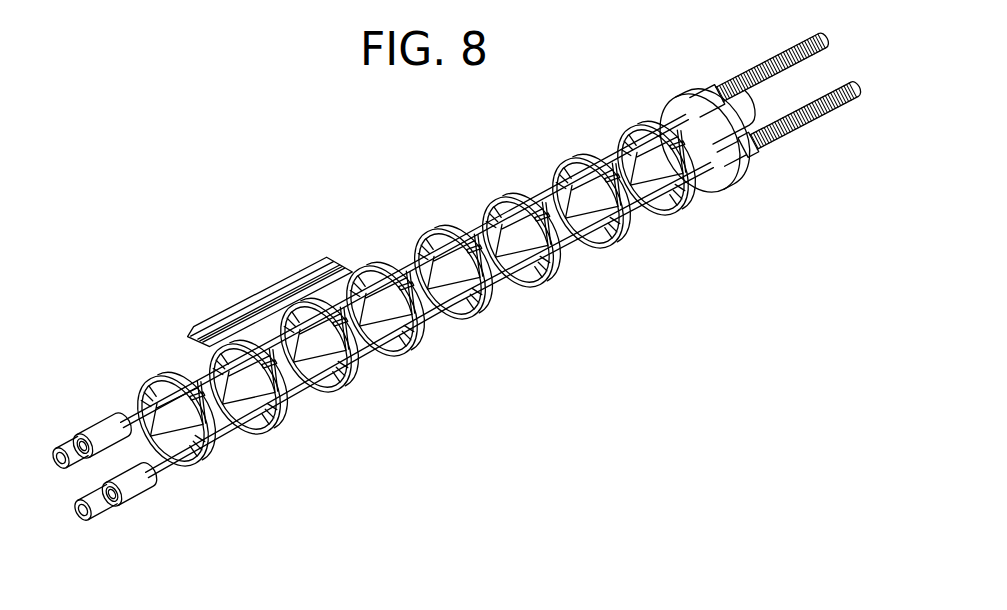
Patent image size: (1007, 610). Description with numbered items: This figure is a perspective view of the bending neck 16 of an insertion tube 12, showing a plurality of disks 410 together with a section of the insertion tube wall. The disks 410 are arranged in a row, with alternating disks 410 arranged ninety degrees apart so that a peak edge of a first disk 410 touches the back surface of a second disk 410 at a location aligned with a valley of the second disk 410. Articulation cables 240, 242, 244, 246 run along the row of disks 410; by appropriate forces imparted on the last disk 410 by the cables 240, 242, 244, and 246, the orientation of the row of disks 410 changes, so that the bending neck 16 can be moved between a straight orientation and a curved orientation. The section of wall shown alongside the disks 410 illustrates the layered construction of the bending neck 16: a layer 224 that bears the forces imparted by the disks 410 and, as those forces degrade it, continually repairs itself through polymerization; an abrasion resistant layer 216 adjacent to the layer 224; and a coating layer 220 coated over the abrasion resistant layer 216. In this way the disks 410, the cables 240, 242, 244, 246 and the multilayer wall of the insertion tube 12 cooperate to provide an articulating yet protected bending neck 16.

The insertion tube 12 is at (391, 166).
The bending neck 16 is at (457, 292).
The abrasion resistant layer 216 is at (247, 312).
The coating layer 220 is at (230, 308).
The layer 224 is at (277, 299).
The articulation cable 240 is at (143, 491).
The articulation cable 242 is at (105, 514).
The articulation cable 244 is at (72, 439).
The articulation cable 246 is at (112, 423).
The disk 410 is at (349, 385).